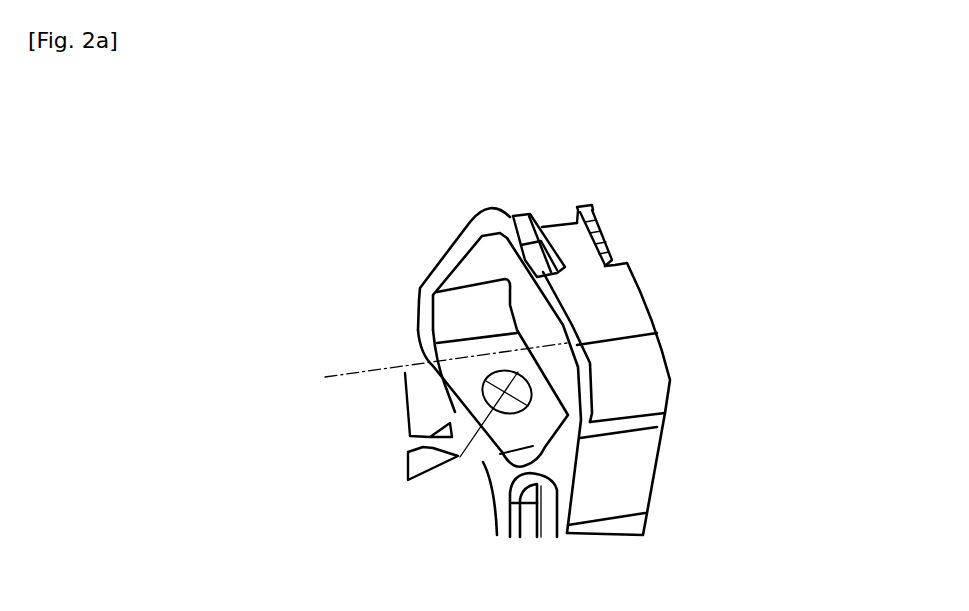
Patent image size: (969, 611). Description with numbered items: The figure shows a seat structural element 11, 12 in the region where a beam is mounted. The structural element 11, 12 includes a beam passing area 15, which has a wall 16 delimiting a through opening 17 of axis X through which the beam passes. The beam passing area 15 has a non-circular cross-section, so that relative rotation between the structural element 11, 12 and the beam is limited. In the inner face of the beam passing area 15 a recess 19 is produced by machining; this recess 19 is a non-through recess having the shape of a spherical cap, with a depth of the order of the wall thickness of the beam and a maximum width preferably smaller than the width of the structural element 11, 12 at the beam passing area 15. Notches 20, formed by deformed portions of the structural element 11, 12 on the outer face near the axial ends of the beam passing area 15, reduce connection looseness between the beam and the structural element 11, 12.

The structural element 11 is at (440, 200).
The structural element 12 is at (507, 343).
The beam passing area 15 is at (419, 288).
The wall 16 is at (562, 327).
The through opening 17 is at (527, 430).
The recess 19 is at (460, 457).
The notches 20 is at (543, 228).
The axis X is at (355, 370).